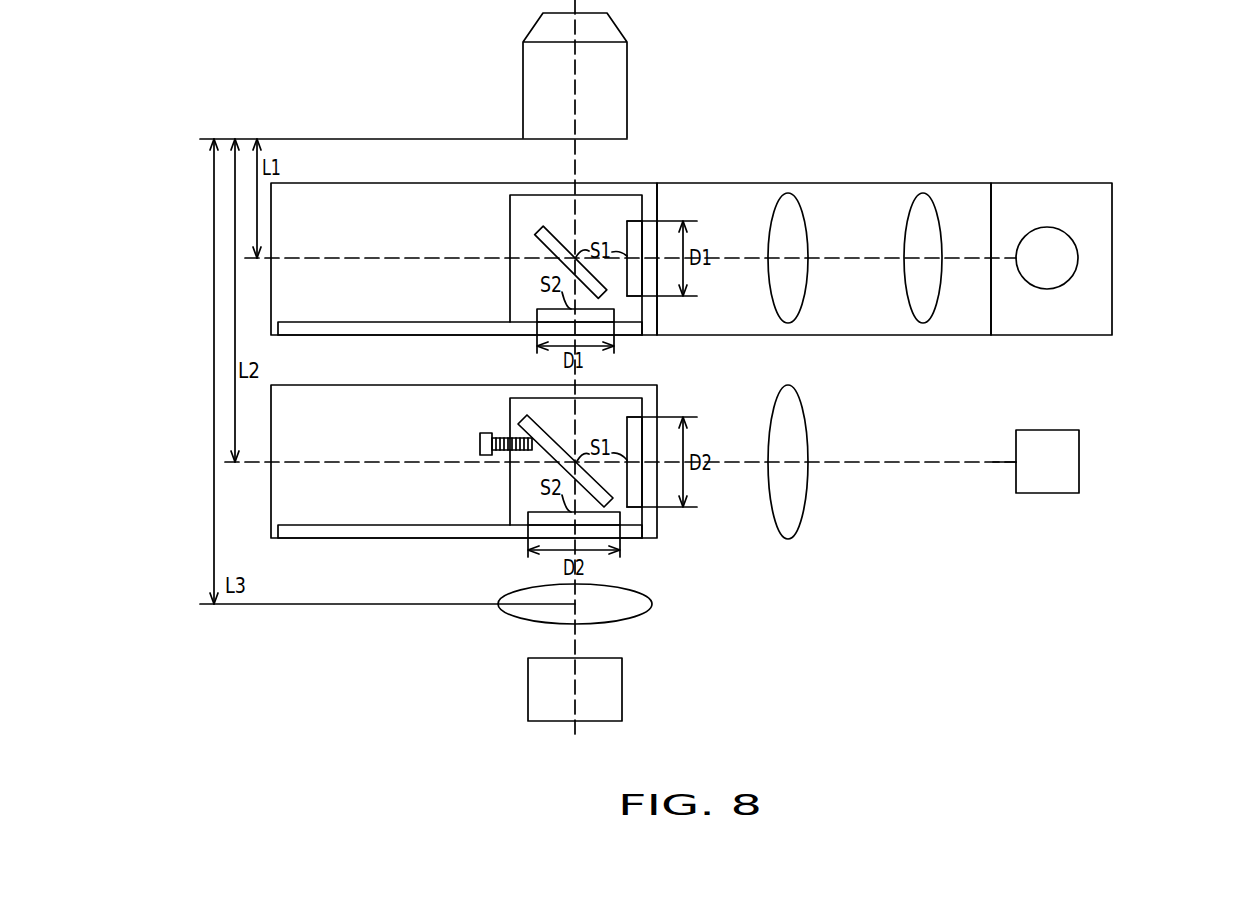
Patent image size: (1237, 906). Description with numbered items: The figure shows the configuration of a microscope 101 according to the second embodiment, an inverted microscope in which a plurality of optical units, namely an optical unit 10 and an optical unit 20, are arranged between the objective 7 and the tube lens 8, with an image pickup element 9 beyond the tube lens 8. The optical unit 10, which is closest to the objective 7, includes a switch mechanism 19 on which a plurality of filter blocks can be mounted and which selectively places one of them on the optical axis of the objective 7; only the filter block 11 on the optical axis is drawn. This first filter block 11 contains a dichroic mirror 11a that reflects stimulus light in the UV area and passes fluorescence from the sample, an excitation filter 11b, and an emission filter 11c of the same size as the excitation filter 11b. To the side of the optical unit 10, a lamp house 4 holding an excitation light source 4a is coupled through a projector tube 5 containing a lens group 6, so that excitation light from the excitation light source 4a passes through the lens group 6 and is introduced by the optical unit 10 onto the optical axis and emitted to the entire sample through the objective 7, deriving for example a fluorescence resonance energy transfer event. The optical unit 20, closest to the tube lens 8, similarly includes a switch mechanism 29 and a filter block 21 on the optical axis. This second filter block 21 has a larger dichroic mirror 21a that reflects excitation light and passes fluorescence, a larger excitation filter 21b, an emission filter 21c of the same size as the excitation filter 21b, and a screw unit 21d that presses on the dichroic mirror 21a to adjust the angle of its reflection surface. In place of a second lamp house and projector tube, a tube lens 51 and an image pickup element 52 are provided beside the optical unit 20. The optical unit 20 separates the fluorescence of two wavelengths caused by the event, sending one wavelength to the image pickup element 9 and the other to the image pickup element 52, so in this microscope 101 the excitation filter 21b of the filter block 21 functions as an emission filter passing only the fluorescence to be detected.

The microscope 101 is at (1235, 74).
The objective 7 is at (620, 90).
The optical unit 10 is at (398, 183).
The filter block 11 is at (587, 194).
The dichroic mirror 11a is at (534, 238).
The excitation filter 11b is at (627, 228).
The emission filter 11c is at (537, 316).
The switch mechanism 19 is at (387, 327).
The optical unit 20 is at (398, 385).
The filter block 21 is at (605, 398).
The dichroic mirror 21a is at (522, 432).
The excitation filter 21b is at (627, 427).
The emission filter 21c is at (528, 520).
The screw unit 21d is at (480, 444).
The switch mechanism 29 is at (380, 532).
The projector tube 5 is at (950, 183).
The lens group 6 is at (913, 230).
The lamp house 4 is at (1095, 183).
The excitation light source 4a is at (1048, 227).
The tube lens 51 is at (790, 385).
The image pickup element 52 is at (1048, 430).
The tube lens 8 is at (640, 603).
The image pickup element 9 is at (622, 685).